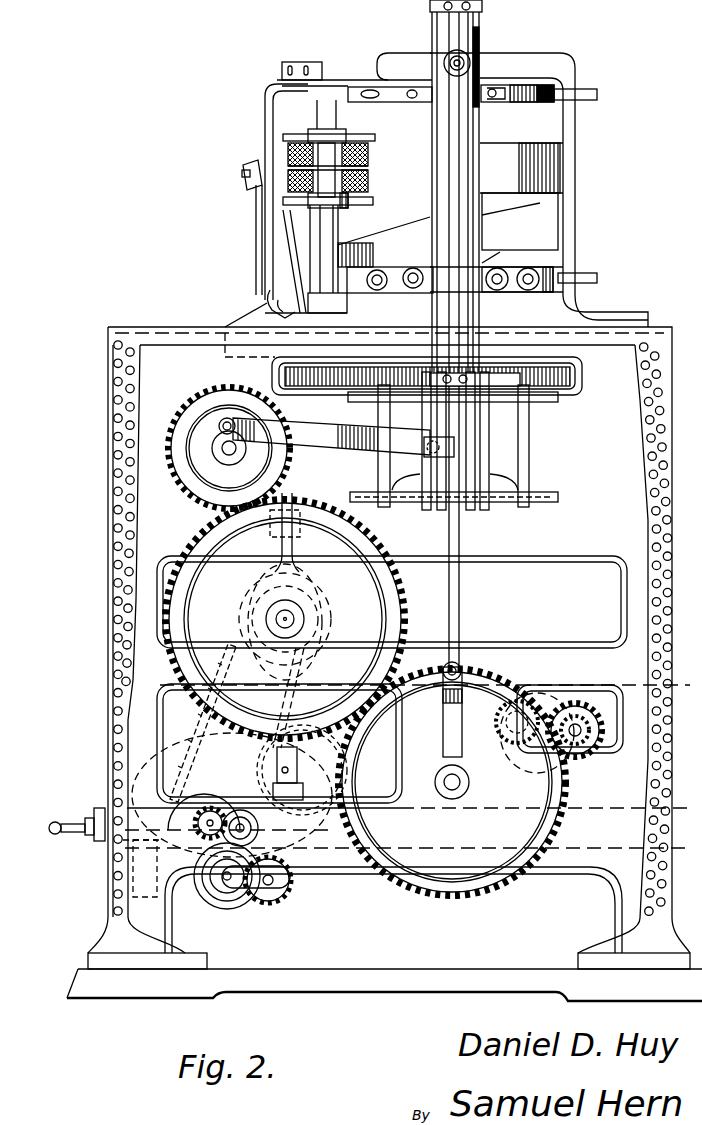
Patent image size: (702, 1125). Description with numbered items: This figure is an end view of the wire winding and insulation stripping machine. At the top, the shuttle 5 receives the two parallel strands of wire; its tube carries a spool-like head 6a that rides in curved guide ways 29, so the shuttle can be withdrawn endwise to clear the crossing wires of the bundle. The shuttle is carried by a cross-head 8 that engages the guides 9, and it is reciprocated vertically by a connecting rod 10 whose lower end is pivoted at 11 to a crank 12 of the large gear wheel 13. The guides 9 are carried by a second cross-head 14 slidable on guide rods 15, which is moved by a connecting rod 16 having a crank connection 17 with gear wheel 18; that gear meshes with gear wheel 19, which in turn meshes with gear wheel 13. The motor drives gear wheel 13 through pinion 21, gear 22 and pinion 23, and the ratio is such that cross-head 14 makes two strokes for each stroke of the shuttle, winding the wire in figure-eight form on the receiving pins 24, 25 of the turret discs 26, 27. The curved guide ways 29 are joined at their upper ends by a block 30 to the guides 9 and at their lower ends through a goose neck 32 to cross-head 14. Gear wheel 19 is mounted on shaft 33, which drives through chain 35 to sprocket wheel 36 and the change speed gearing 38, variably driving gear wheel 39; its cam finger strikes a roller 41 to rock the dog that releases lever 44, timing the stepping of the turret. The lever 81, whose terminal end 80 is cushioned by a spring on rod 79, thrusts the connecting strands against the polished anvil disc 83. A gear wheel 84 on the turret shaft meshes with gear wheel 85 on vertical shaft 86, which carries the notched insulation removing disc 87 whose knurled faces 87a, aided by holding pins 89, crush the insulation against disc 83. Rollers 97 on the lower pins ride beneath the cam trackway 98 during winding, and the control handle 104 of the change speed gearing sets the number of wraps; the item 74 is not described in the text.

The shuttle 5 is at (482, 56).
The spool-like head 6a is at (445, 60).
The cross-head 8 is at (477, 72).
The guides 9 is at (470, 126).
The connecting rod 10 is at (459, 538).
The pivotal connection 11 is at (457, 662).
The crank 12 is at (443, 722).
The gear wheel 13 is at (452, 782).
The cross-head 14 is at (485, 470).
The guide rods 15 is at (545, 512).
The connecting rod 16 is at (348, 449).
The crank connection 17 is at (222, 428).
The gear wheel 18 is at (229, 448).
The gear wheel 19 is at (392, 598).
The pinion 21 is at (503, 713).
The gear 22 is at (576, 716).
The pinion 23 is at (582, 740).
The receiving pins 24 is at (597, 95).
The receiving pins 25 is at (597, 278).
The turret disc 26 is at (512, 102).
The turret disc 27 is at (515, 268).
The curved guide ways 29 is at (462, 168).
The block 30 is at (482, 8).
The goose neck 32 is at (537, 390).
The shaft 33 is at (290, 619).
The chain 35 is at (200, 738).
The sprocket wheel 36 is at (214, 790).
The change speed gearing 38 is at (228, 895).
The gear wheel 39 is at (312, 775).
The roller 41 is at (296, 758).
The lever 44 is at (292, 707).
The pawl 74 is at (265, 307).
The rod or bolt 79 is at (238, 178).
The terminal end 80 is at (253, 195).
The lever 81 is at (256, 242).
The anvil disc 83 is at (412, 185).
The gear wheel 84 is at (577, 378).
The gear wheel 85 is at (285, 372).
The vertical shaft 86 is at (334, 218).
The insulation removing disc 87 is at (368, 167).
The knurled faces 87a is at (372, 150).
The pins 89 is at (360, 133).
The rollers 97 is at (380, 293).
The cam trackway 98 is at (372, 255).
The control handle 104 is at (62, 805).